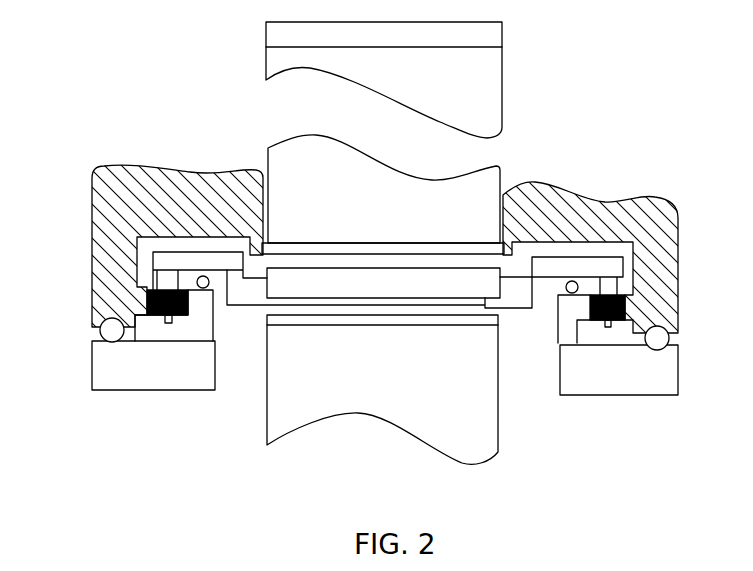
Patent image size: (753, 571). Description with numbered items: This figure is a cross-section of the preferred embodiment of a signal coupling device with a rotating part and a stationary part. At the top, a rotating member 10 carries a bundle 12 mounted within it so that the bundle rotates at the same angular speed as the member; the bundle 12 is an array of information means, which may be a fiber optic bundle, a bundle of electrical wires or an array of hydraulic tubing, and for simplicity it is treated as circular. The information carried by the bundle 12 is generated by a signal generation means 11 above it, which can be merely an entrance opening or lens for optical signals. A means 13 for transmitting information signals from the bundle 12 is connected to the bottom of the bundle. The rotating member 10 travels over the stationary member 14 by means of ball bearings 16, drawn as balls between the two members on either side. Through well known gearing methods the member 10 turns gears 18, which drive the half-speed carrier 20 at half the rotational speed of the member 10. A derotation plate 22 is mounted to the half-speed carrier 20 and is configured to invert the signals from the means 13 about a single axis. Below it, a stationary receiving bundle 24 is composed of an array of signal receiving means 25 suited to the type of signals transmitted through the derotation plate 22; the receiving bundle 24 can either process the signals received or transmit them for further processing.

The rotating member 10 is at (134, 167).
The signal generation means 11 is at (384, 35).
The bundle 12 is at (384, 87).
The means for transmitting information signals 13 is at (457, 252).
The stationary member 14 is at (140, 380).
The ball bearings 16 is at (100, 333).
The gears 18 is at (182, 317).
The half-speed carrier 20 is at (388, 272).
The derotation plate 22 is at (412, 294).
The receiving bundle 24 is at (386, 397).
The signal receiving means 25 is at (330, 324).